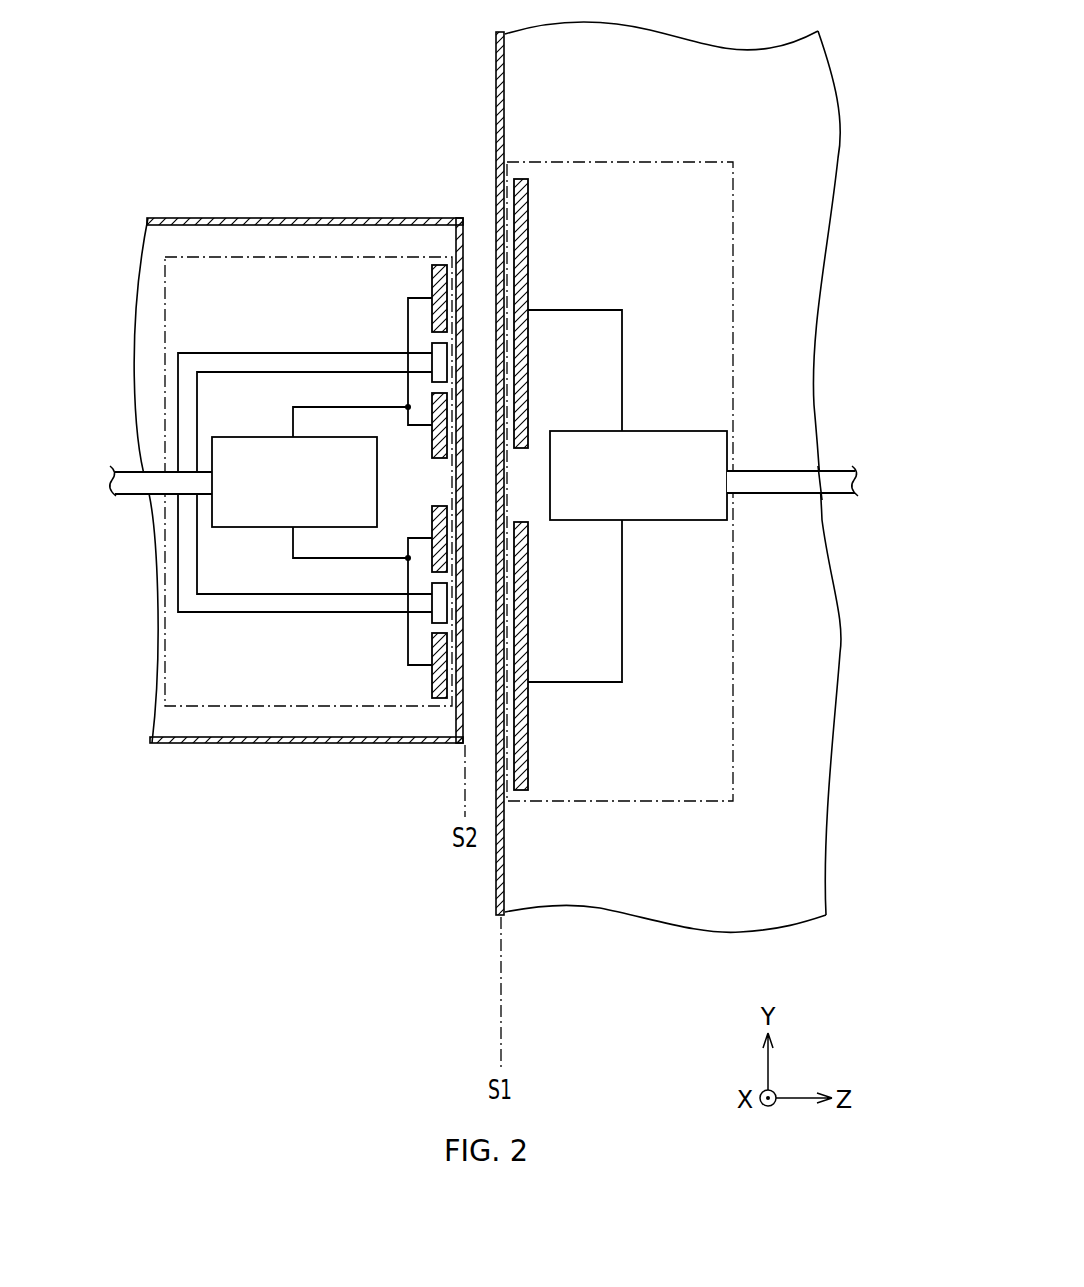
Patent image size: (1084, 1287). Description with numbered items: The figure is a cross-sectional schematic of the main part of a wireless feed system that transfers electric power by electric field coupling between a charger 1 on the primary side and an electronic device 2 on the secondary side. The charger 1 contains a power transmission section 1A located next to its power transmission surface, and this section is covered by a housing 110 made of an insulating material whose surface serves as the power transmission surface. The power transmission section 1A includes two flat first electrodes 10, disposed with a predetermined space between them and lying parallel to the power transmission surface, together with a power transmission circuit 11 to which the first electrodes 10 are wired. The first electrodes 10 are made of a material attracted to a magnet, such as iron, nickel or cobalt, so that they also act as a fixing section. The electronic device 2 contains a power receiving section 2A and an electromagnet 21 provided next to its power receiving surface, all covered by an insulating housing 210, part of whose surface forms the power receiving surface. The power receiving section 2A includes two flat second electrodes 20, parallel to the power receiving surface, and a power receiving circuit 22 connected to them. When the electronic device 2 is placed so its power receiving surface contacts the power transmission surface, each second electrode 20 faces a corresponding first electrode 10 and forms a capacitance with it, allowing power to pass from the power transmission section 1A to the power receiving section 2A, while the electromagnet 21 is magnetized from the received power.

The charger 1 is at (647, 532).
The power transmission section 1A is at (616, 160).
The first electrode 10 is at (526, 214).
The power transmission circuit 11 is at (673, 429).
The housing 110 is at (496, 868).
The electronic device 2 is at (286, 402).
The power receiving section 2A is at (287, 256).
The second electrode 20 is at (431, 289).
The electromagnet 21 is at (431, 351).
The power receiving circuit 22 is at (250, 436).
The housing 210 is at (169, 218).